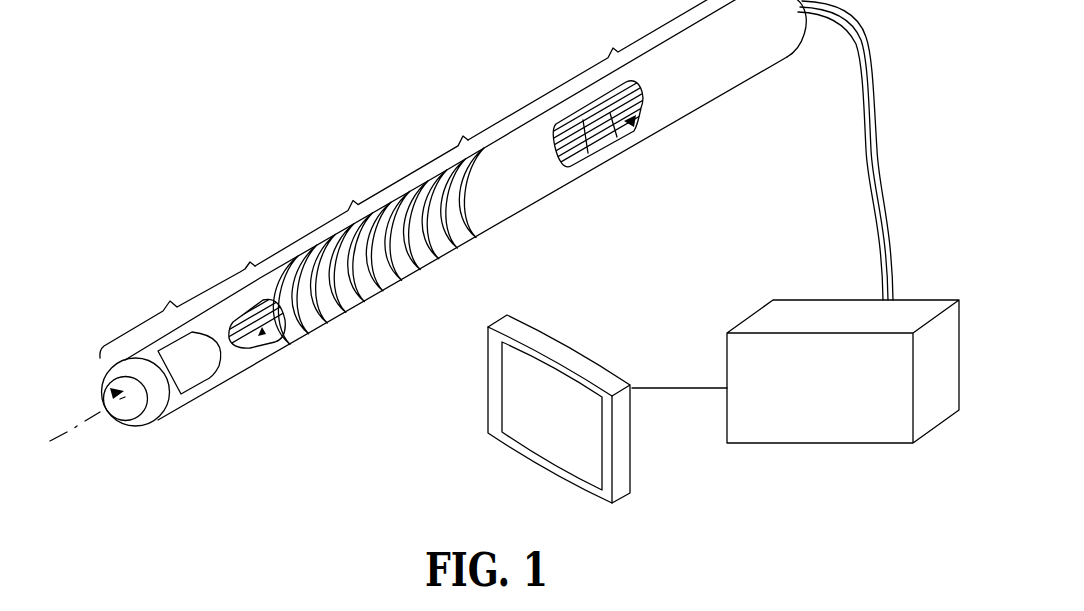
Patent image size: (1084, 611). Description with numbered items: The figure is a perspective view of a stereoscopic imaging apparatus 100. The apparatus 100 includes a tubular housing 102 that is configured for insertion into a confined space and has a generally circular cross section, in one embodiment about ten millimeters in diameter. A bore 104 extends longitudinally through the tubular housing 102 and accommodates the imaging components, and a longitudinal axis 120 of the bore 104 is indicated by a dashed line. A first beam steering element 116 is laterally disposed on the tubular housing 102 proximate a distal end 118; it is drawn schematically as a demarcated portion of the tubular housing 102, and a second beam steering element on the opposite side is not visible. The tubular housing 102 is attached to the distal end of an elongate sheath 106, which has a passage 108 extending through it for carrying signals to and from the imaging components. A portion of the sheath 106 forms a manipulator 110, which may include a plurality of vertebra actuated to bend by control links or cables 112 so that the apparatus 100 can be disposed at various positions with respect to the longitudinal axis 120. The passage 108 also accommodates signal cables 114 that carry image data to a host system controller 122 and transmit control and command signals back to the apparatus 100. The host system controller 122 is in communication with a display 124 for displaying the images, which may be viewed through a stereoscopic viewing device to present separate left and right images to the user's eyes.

The stereoscopic imaging apparatus 100 is at (177, 344).
The tubular housing 102 is at (268, 362).
The bore 104 is at (288, 322).
The elongate sheath 106 is at (588, 70).
The passage 108 is at (647, 113).
The manipulator 110 is at (369, 240).
The control links or cables 112 is at (600, 160).
The signal cables 114 is at (620, 131).
The first beam steering element 116 is at (197, 370).
The distal end 118 is at (110, 393).
The longitudinal axis 120 is at (63, 434).
The host system controller 122 is at (785, 317).
The display 124 is at (527, 466).